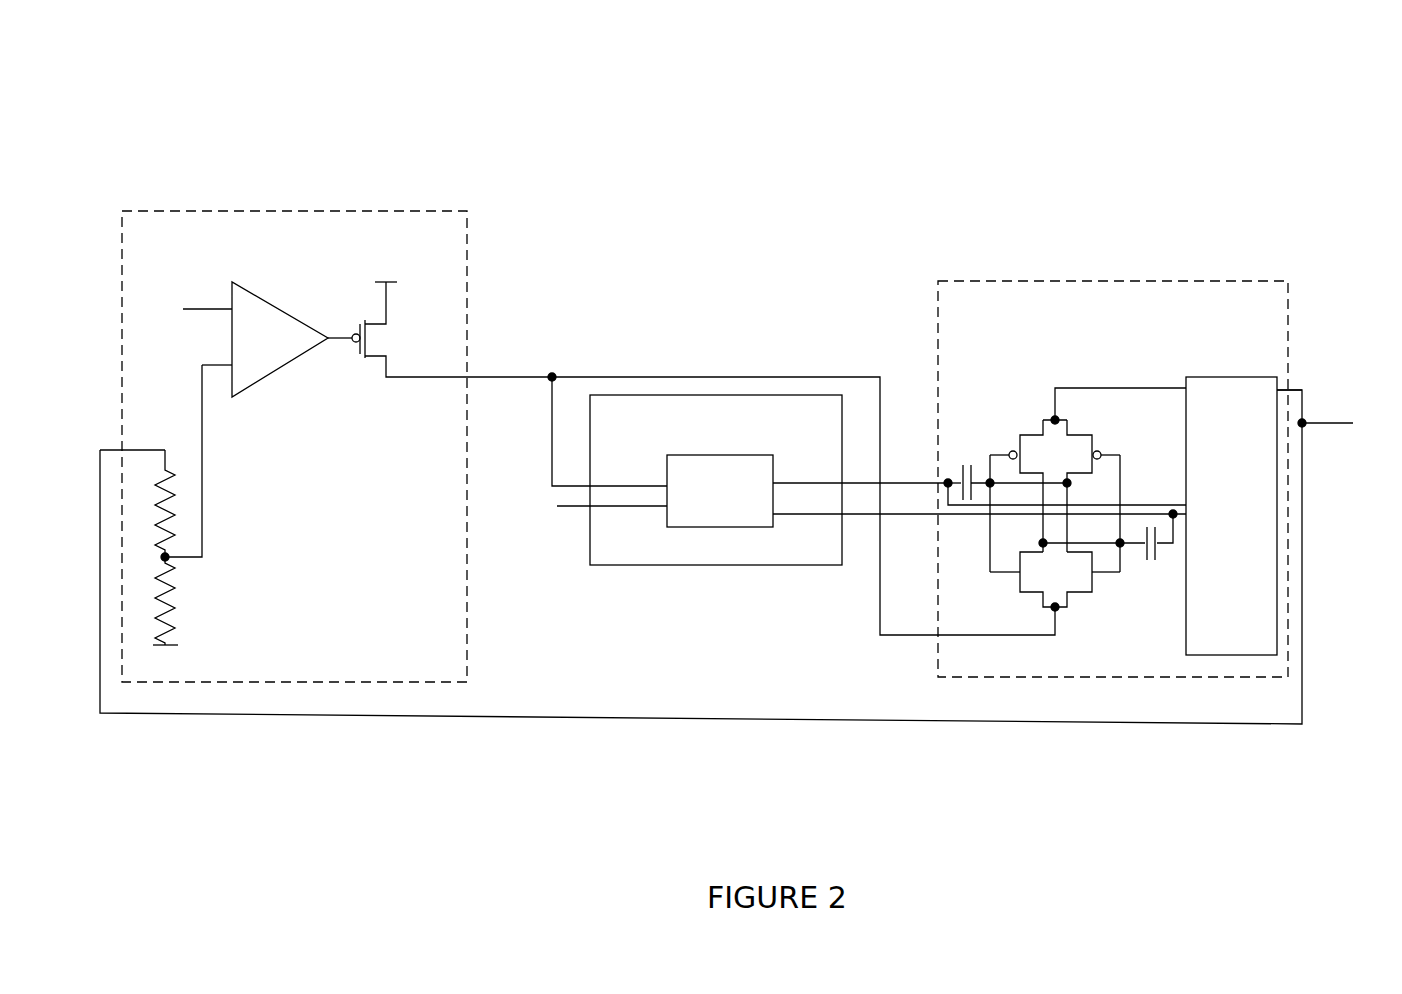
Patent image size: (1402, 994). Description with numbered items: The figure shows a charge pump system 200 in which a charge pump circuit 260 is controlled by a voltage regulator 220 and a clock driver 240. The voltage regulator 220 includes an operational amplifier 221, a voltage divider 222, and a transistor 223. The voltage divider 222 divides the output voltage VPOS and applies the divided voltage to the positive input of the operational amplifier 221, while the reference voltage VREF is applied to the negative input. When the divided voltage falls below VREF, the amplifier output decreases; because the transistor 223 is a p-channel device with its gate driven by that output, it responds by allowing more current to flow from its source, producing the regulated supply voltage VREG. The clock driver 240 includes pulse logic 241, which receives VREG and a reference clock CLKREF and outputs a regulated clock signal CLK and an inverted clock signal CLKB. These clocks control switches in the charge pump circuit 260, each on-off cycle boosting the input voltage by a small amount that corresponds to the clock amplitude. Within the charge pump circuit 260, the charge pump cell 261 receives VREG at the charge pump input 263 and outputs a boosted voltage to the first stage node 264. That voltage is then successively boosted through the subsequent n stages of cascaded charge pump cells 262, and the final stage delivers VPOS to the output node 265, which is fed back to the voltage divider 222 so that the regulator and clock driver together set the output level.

The charge pump system 200 is at (1215, 107).
The voltage regulator 220 is at (294, 446).
The operational amplifier 221 is at (241, 255).
The voltage divider 222 is at (215, 571).
The transistor 223 is at (355, 372).
The clock driver 240 is at (661, 469).
The pulse logic 241 is at (720, 491).
The charge pump circuit 260 is at (1113, 479).
The charge pump cell 261 is at (996, 395).
The cascaded charge pump cells 262 is at (1231, 516).
The charge pump input 263 is at (904, 667).
The first stage node 264 is at (1145, 341).
The output node 265 is at (1335, 394).